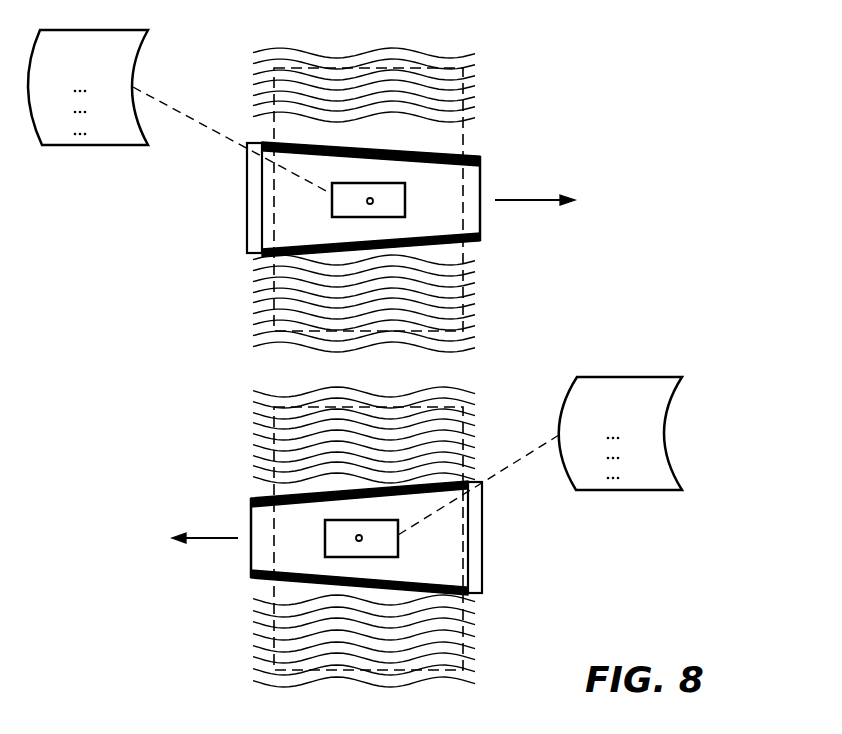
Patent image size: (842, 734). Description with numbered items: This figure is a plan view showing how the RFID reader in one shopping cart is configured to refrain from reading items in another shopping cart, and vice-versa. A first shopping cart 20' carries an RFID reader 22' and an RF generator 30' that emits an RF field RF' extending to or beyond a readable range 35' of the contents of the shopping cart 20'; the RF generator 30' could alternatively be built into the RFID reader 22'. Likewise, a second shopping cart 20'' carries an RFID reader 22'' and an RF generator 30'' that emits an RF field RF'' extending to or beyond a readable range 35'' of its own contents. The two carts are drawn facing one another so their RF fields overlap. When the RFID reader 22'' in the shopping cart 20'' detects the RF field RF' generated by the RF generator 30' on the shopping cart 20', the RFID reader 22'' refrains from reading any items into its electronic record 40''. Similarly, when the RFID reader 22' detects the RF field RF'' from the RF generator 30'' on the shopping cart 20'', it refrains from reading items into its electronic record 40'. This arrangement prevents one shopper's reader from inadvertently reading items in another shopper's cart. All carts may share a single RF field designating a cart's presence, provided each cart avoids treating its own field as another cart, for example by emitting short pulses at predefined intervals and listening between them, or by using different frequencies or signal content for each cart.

The shopping cart 20' is at (326, 197).
The RFID reader 22' is at (429, 210).
The RF generator 30' is at (371, 310).
The readable range 35' is at (413, 199).
The RF field RF' is at (324, 200).
The electronic record 40' is at (88, 117).
The shopping cart 20'' is at (413, 539).
The RFID reader 22'' is at (290, 551).
The RF generator 30'' is at (330, 511).
The readable range 35'' is at (416, 526).
The RF field RF'' is at (413, 537).
The electronic record 40'' is at (660, 433).